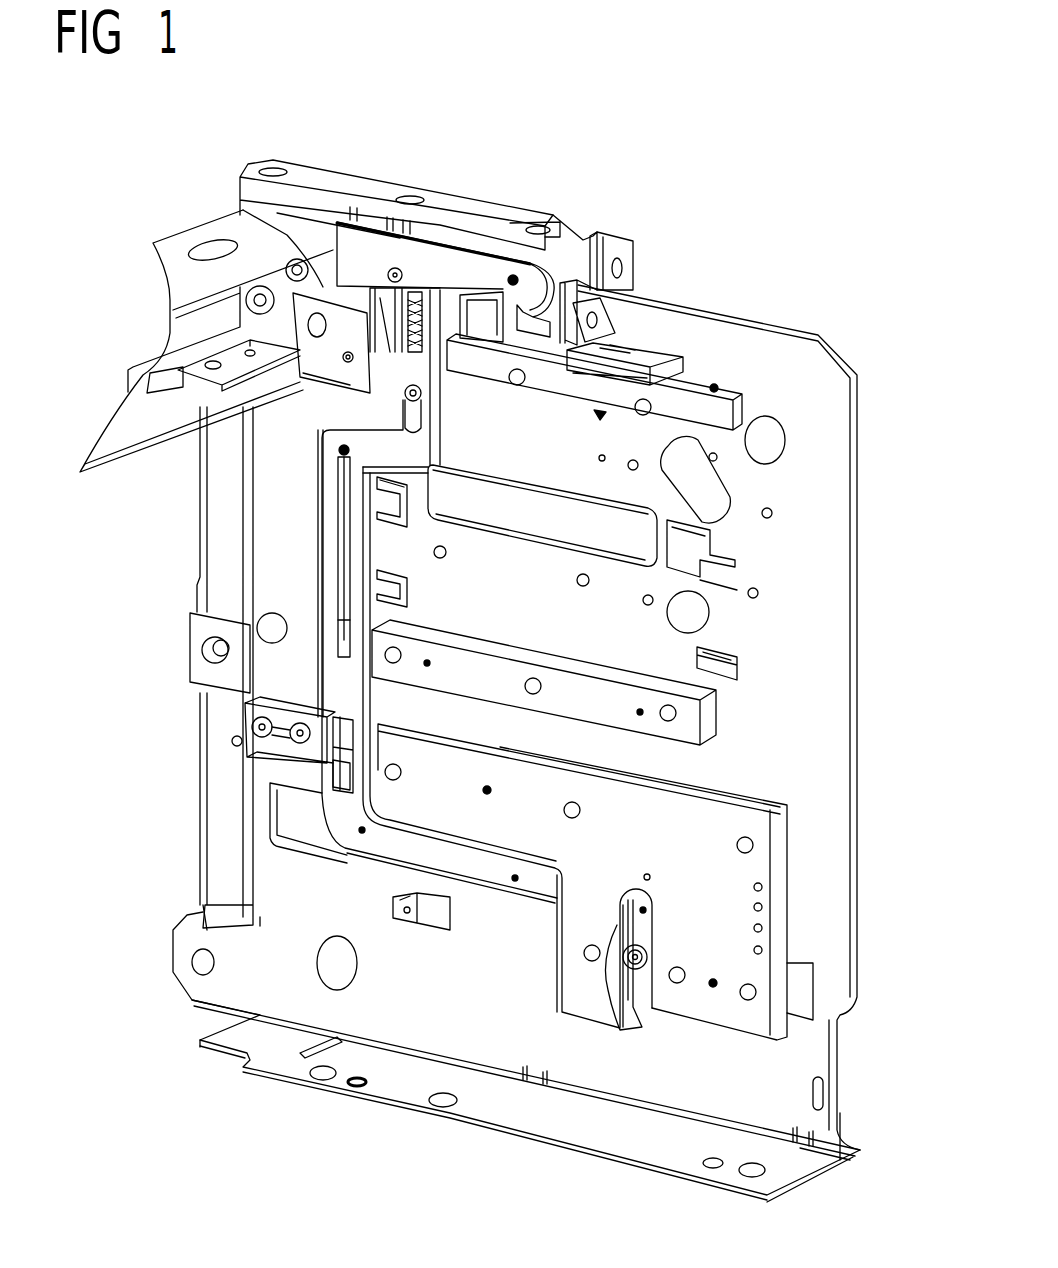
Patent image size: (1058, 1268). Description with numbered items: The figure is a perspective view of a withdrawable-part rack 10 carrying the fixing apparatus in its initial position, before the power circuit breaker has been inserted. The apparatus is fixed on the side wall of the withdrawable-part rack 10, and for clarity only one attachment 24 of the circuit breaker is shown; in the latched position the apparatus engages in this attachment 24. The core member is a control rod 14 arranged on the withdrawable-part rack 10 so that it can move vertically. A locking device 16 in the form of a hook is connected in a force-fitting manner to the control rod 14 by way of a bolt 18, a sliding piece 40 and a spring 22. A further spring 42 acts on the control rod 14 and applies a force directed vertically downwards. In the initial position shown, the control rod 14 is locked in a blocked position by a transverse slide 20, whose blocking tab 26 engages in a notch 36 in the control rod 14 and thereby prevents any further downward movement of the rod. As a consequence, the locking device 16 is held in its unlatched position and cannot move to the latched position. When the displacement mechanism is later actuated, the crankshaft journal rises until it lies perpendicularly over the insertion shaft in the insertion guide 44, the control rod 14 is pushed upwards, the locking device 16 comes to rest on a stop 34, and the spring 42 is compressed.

The withdrawable-part rack 10 is at (820, 630).
The control rod 14 is at (392, 858).
The locking device 16 is at (500, 242).
The bolt 18 is at (395, 266).
The transverse slide 20 is at (253, 760).
The spring 22 is at (418, 290).
The attachment 24 is at (650, 350).
The blocking tab 26 is at (337, 785).
The stop 34 is at (333, 300).
The notch 36 is at (347, 720).
The sliding piece 40 is at (483, 283).
The spring 42 is at (340, 557).
The insertion guide 44 is at (620, 1030).